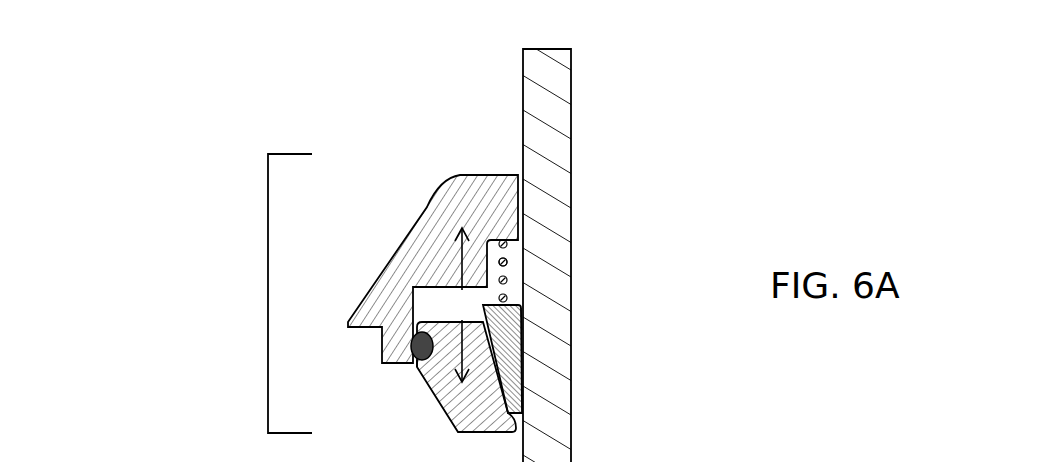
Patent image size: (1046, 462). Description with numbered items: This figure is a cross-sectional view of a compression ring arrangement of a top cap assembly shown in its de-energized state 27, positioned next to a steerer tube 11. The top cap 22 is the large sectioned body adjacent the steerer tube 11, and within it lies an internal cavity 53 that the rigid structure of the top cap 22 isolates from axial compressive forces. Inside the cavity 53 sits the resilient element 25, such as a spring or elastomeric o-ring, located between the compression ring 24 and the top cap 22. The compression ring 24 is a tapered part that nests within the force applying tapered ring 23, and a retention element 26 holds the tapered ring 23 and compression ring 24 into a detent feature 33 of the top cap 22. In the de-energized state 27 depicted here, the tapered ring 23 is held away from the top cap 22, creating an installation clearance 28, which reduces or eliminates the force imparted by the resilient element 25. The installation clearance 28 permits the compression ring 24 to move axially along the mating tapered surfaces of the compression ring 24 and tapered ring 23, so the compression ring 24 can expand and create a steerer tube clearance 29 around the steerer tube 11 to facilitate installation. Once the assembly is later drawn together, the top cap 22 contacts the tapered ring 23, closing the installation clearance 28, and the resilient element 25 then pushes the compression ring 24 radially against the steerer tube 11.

The steerer tube 11 is at (547, 395).
The top cap 22 is at (487, 175).
The force applying tapered ring 23 is at (475, 390).
The compression ring 24 is at (507, 352).
The resilient element 25 is at (508, 258).
The retention element 26 is at (418, 367).
The de-energized state 27 is at (268, 268).
The installation clearance 28 is at (450, 303).
The steerer tube clearance 29 is at (519, 323).
The detent feature 33 is at (412, 347).
The internal cavity 53 is at (517, 283).